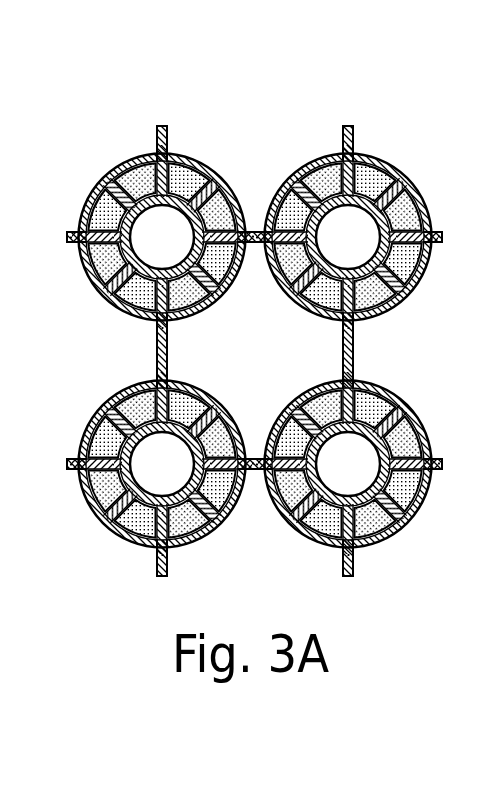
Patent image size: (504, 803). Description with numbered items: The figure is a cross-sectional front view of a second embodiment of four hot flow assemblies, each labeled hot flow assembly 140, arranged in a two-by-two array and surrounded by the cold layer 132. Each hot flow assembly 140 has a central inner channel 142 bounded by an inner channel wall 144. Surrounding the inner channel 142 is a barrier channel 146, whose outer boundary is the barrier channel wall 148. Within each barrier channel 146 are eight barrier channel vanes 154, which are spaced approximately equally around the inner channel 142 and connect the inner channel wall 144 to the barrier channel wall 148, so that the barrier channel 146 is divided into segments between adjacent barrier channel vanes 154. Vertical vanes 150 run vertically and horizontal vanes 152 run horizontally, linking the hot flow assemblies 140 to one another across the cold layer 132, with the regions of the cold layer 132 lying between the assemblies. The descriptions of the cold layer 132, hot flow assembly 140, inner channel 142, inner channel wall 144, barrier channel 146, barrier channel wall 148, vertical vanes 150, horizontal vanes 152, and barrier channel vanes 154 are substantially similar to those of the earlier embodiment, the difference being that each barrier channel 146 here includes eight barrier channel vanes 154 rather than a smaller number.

The cold layer 132 is at (270, 355).
The hot flow assembly 140 is at (373, 314).
The inner channel 142 is at (84, 211).
The inner channel wall 144 is at (142, 228).
The barrier channel 146 is at (173, 176).
The barrier channel wall 148 is at (198, 163).
The vertical vanes 150 is at (152, 354).
The horizontal vanes 152 is at (253, 466).
The barrier channel vanes 154 is at (390, 207).